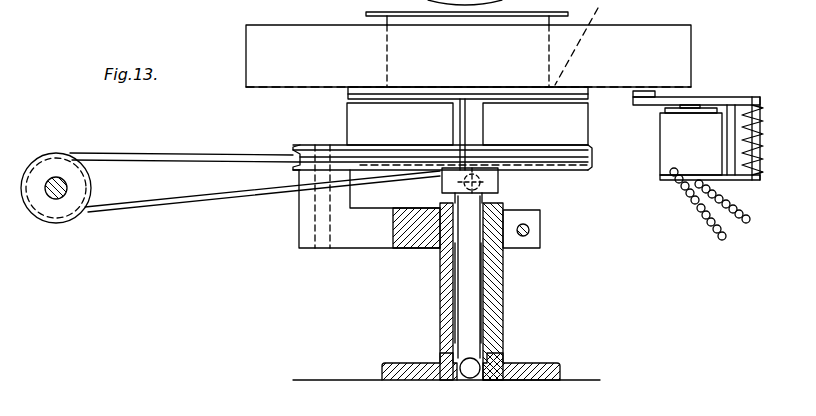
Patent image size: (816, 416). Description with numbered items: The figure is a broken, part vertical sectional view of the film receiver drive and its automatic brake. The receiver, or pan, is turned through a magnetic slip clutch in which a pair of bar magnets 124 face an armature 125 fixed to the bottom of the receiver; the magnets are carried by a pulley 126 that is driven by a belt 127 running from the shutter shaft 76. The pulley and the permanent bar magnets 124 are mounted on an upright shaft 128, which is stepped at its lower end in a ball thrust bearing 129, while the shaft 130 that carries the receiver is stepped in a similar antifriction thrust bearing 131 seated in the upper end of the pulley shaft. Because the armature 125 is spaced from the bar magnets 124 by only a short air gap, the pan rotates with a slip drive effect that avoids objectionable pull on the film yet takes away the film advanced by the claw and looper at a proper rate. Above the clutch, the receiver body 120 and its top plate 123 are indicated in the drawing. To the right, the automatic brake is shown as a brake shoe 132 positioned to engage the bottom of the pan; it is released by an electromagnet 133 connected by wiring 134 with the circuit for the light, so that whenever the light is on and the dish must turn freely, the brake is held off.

The shutter shaft 76 is at (67, 185).
The housing 120 is at (680, 44).
The top plate 123 is at (569, 6).
The bar magnets 124 is at (467, 124).
The armature 125 is at (348, 88).
The pulley 126 is at (570, 168).
The belt 127 is at (193, 202).
The upright shaft 128 is at (475, 313).
The ball thrust bearing 129 is at (480, 354).
The shaft 130 is at (484, 116).
The antifriction thrust bearing 131 is at (498, 181).
The brake shoe 132 is at (637, 95).
The electromagnet 133 is at (672, 141).
The wiring 134 is at (748, 224).